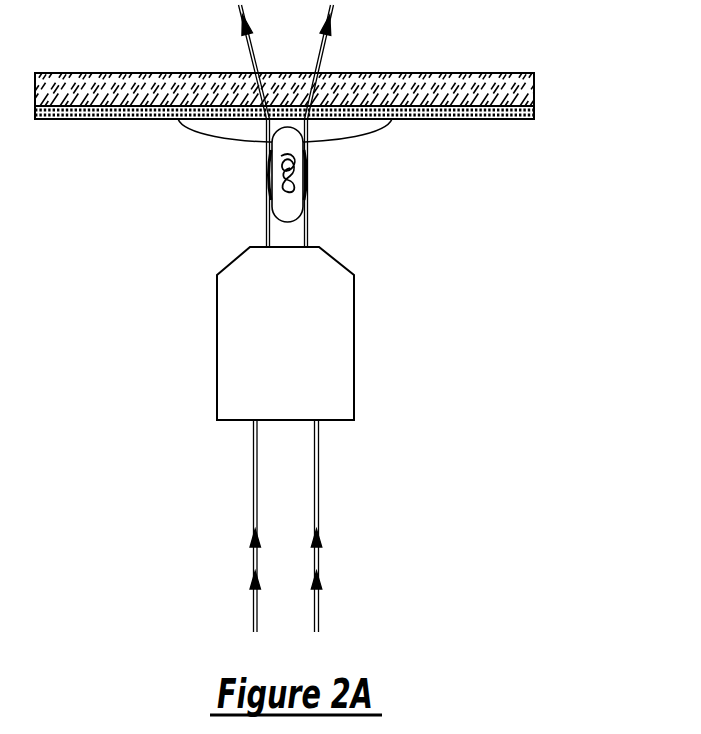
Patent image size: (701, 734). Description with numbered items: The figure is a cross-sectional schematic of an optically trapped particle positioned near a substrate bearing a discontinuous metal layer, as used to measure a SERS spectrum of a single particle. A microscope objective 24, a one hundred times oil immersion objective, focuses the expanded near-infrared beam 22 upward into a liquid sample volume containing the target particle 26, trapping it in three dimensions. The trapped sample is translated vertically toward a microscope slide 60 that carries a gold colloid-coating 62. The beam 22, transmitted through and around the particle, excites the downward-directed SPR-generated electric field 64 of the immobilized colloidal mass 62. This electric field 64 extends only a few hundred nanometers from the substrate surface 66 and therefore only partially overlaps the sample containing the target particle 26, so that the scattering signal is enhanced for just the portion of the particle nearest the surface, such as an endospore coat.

The expanded beam 22 is at (319, 555).
The microscope objective 24 is at (354, 347).
The target particle 26 is at (264, 173).
The microscope slide 60 is at (534, 88).
The gold colloid-coating 62 is at (534, 110).
The SPR-generated electric field 64 is at (362, 131).
The substrate surface 66 is at (450, 120).